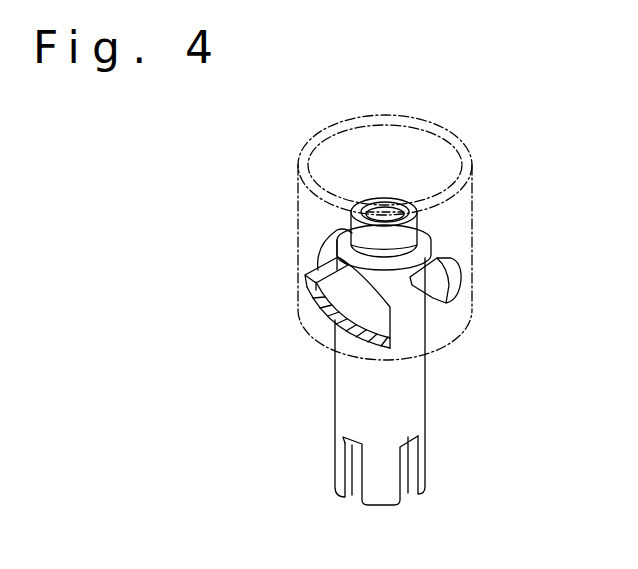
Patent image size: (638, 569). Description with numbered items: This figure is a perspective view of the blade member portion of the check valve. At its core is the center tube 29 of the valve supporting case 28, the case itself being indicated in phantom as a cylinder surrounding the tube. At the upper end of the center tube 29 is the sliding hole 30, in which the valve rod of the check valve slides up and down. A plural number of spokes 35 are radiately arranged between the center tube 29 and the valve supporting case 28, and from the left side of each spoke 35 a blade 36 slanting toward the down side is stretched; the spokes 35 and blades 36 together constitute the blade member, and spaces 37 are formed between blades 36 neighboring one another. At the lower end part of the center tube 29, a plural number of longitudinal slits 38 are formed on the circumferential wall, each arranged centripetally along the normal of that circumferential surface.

The valve supporting case 28 is at (472, 213).
The center tube 29 is at (418, 400).
The sliding hole 30 is at (397, 204).
The spokes 35 is at (458, 282).
The blades 36 is at (331, 246).
The spaces 37 is at (410, 320).
The longitudinal slits 38 is at (357, 470).